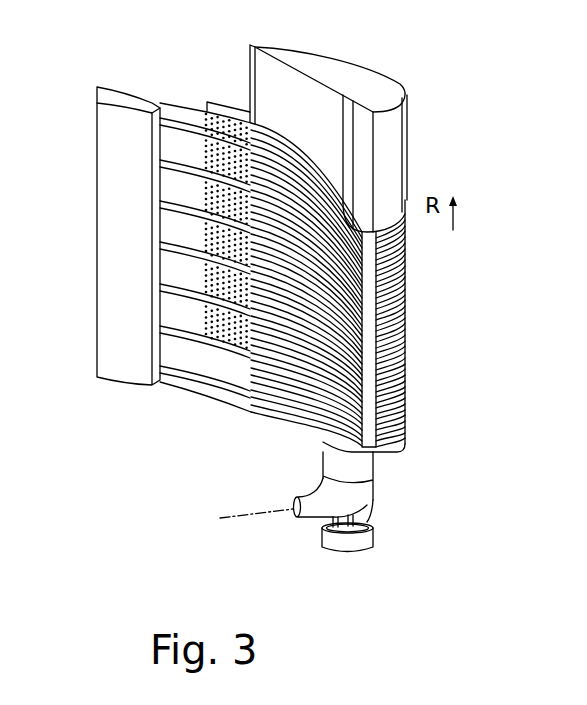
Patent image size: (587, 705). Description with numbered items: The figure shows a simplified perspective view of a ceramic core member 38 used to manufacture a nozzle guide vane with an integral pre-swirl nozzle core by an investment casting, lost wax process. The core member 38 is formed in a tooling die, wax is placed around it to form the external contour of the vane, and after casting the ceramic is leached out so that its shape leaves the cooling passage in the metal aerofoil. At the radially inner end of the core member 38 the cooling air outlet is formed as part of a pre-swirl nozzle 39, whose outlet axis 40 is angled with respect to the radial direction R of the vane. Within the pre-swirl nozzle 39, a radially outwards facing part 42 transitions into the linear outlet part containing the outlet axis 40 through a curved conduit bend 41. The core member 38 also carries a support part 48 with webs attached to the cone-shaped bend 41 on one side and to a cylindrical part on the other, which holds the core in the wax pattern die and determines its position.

The ceramic core member 38 is at (395, 70).
The pre-swirl nozzle 39 is at (377, 493).
The outlet axis 40 is at (260, 517).
The curved conduit bend 41 is at (323, 474).
The radially outwards facing part 42 is at (363, 473).
The support part 48 is at (377, 537).